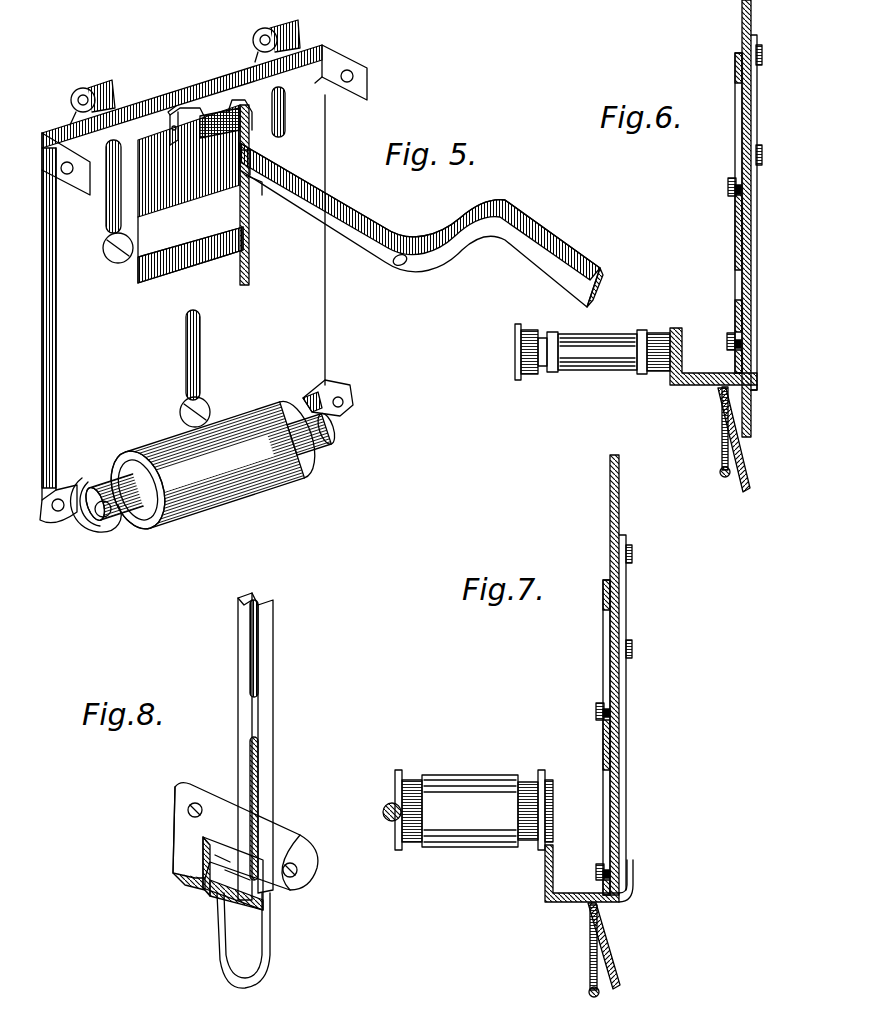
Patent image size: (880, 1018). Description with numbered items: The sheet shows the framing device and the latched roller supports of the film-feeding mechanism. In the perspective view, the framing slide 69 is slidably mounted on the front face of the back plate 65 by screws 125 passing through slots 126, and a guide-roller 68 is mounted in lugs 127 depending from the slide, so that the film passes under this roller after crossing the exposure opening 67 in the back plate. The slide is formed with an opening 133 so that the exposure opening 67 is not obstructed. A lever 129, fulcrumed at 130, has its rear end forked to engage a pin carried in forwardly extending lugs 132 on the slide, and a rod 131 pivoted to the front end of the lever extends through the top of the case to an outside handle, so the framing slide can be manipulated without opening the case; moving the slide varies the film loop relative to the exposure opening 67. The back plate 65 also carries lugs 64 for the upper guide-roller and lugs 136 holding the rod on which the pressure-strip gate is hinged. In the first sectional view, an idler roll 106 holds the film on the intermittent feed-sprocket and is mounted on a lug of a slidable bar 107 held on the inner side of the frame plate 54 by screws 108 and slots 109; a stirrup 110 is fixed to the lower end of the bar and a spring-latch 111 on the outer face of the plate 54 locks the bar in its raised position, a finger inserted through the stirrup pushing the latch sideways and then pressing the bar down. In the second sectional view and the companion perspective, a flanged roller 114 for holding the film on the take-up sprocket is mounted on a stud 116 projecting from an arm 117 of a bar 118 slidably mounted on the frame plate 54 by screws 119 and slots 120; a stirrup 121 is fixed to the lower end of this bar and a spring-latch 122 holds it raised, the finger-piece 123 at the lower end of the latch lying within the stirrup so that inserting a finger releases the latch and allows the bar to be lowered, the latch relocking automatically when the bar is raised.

In FIG. 6, the frame plate 54 is at (742, 21).
In FIG. 7, the frame plate 54 is at (610, 500).
In FIG. 5, the lugs 64 is at (92, 84).
In FIG. 5, the back plate 65 is at (168, 95).
In FIG. 5, the exposure opening 67 is at (190, 194).
In FIG. 5, the guide-roller 68 is at (233, 496).
In FIG. 5, the framing slide 69 is at (182, 309).
In FIG. 6, the idler roll 106 is at (636, 360).
In FIG. 6, the slidable bar 107 is at (735, 218).
In FIG. 6, the screws 108 is at (728, 185).
In FIG. 6, the slots 109 is at (735, 148).
In FIG. 6, the stirrup 110 is at (722, 453).
In FIG. 6, the spring-latch 111 is at (746, 470).
In FIG. 7, the flanged roller 114 is at (474, 810).
In FIG. 7, the studs 116 is at (385, 806).
In FIG. 7, the arm 117 is at (548, 830).
In FIG. 8, the arm 117 is at (255, 852).
In FIG. 7, the bar 118 is at (603, 742).
In FIG. 7, the screws 119 is at (597, 708).
In FIG. 7, the slots 120 is at (603, 648).
In FIG. 8, the slots 120 is at (255, 672).
In FIG. 7, the stirrup 121 is at (590, 968).
In FIG. 8, the stirrup 121 is at (272, 935).
In FIG. 7, the spring-latch 122 is at (620, 905).
In FIG. 7, the finger-piece 123 is at (608, 962).
In FIG. 5, the screws 125 is at (104, 258).
In FIG. 5, the slots 126 is at (106, 205).
In FIG. 5, the lugs 127 is at (124, 520).
In FIG. 5, the lever 129 is at (362, 223).
In FIG. 5, the fulcrum 130 is at (400, 268).
In FIG. 5, the rod 131 is at (205, 105).
In FIG. 5, the lugs 132 is at (236, 130).
In FIG. 5, the opening 133 is at (252, 268).
In FIG. 5, the lugs 136 is at (305, 45).